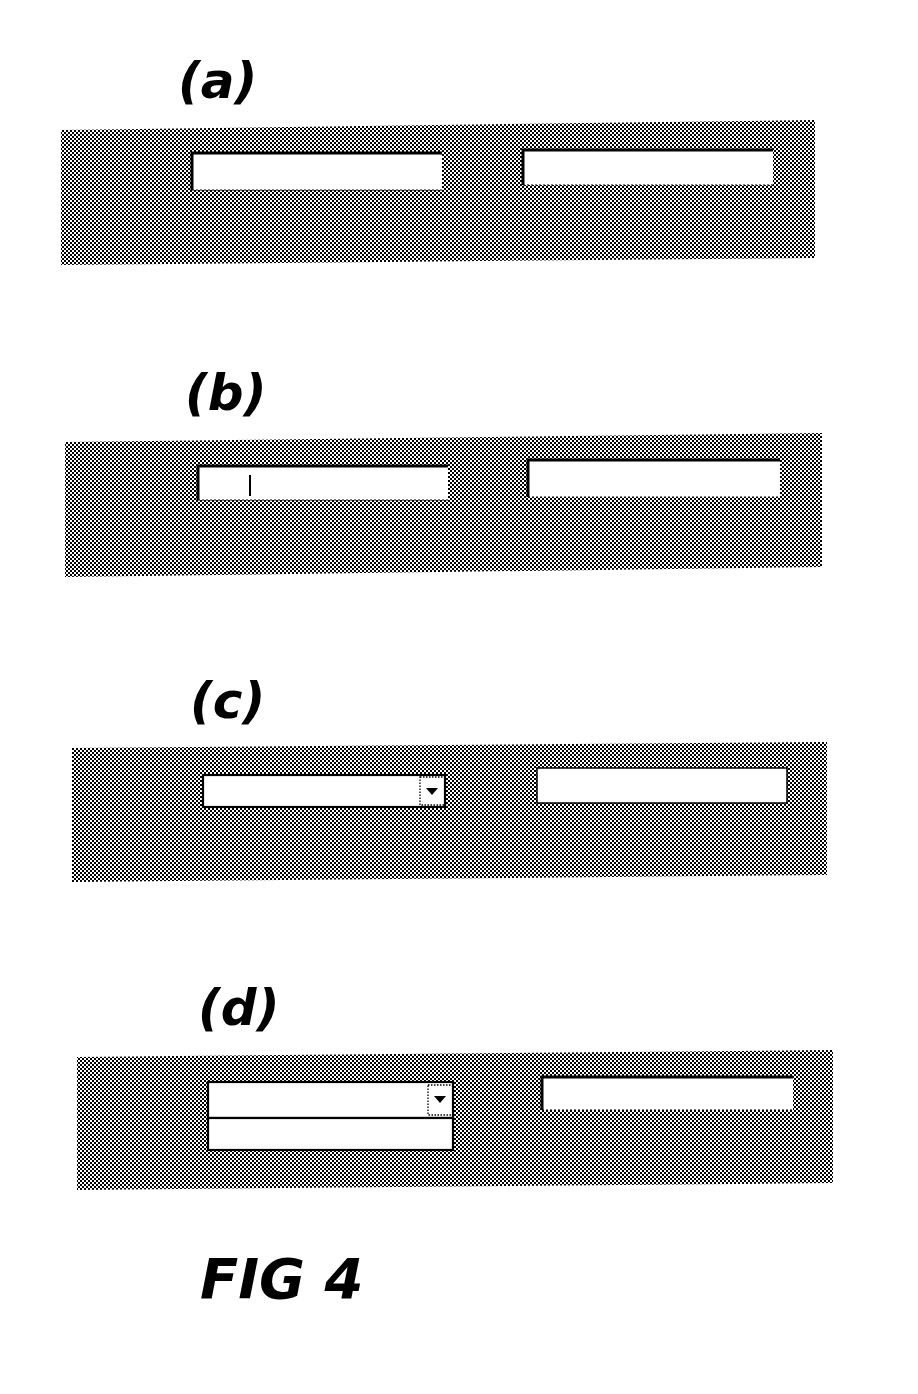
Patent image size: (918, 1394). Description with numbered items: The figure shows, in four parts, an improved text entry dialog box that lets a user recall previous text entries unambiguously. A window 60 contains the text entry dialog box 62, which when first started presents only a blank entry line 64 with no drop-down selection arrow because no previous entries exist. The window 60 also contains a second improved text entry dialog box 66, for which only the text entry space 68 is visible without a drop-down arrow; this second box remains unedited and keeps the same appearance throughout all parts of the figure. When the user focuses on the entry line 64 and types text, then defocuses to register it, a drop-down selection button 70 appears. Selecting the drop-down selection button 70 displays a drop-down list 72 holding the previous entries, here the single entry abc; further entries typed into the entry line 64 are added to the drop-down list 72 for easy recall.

The window 60 is at (497, 95).
The text entry dialog box 62 is at (292, 148).
The entry line 64 is at (345, 165).
The second improved text entry dialog box 66 is at (660, 140).
The text entry space 68 is at (583, 165).
The drop-down selection button 70 is at (440, 758).
The drop-down list 72 is at (398, 1132).